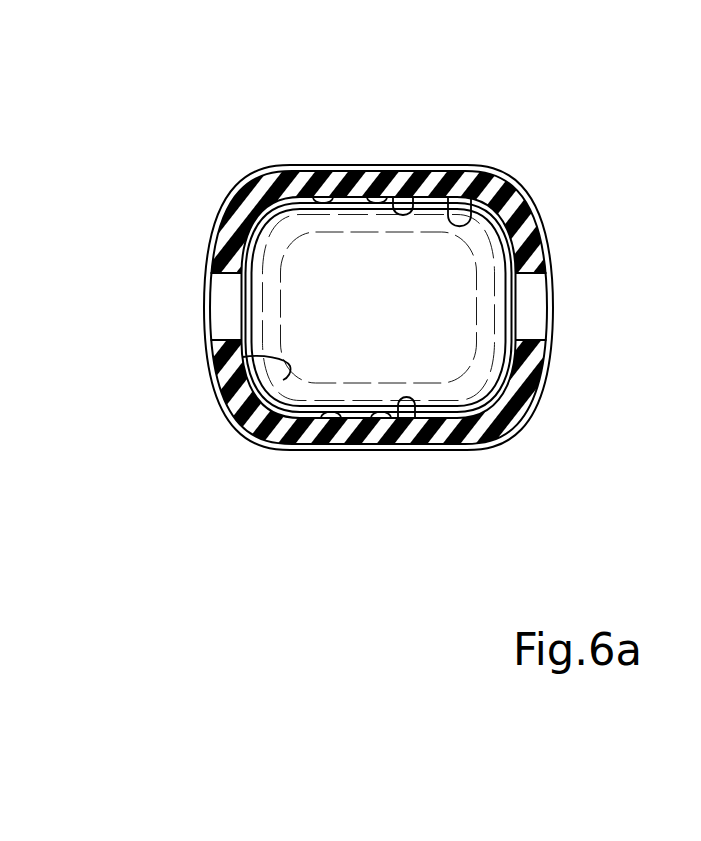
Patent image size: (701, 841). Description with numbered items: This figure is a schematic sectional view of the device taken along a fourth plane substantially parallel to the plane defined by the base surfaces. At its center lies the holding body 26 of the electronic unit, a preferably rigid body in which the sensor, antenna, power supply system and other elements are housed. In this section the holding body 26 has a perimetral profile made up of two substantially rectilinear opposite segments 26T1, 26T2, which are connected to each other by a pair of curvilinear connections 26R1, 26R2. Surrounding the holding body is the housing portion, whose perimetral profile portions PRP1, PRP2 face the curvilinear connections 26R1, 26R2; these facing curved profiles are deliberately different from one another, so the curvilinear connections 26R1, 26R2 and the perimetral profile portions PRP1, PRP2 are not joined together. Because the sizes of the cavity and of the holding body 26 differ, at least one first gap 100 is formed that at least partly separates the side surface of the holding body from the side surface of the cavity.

The first gap 100 is at (267, 220).
The holding body 26 is at (357, 278).
The rectilinear segment 26T1 is at (413, 206).
The rectilinear segment 26T2 is at (417, 415).
The curvilinear connection 26R1 is at (462, 227).
The curvilinear connection 26R2 is at (283, 380).
The perimetral profile portion PRP1 is at (505, 242).
The perimetral profile portion PRP2 is at (256, 424).